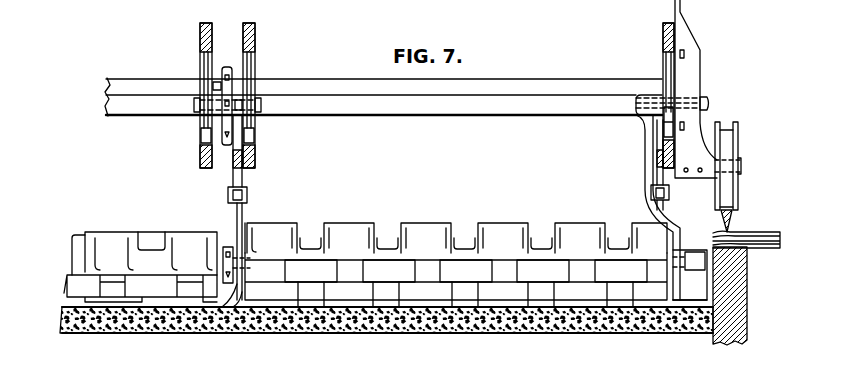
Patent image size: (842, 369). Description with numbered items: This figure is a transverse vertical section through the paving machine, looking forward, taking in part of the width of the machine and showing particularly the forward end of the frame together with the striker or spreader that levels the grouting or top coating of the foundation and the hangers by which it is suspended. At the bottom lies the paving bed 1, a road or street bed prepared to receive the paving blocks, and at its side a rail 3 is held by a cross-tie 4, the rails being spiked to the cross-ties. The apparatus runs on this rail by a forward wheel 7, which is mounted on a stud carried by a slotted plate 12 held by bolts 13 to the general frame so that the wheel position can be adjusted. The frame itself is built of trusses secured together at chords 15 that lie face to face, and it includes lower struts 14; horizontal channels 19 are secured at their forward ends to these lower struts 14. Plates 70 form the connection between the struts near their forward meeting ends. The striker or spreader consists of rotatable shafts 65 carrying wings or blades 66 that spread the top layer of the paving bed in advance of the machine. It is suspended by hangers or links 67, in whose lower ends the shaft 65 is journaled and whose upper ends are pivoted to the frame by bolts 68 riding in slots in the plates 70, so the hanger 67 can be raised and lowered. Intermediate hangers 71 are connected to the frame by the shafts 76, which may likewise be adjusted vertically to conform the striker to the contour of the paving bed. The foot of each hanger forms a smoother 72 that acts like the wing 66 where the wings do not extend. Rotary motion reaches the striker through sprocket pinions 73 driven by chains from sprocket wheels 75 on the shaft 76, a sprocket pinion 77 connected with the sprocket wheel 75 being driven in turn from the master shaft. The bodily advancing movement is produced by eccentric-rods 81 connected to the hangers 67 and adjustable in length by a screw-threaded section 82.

The paving bed 1 is at (389, 327).
The rails 3 is at (729, 226).
The cross-ties 4 is at (777, 240).
The forward wheels 7 is at (734, 122).
The slotted plates 12 is at (692, 65).
The bolts 13 is at (684, 52).
The struts 14 is at (205, 24).
The chords 15 is at (475, 80).
The horizontal channels 19 is at (205, 134).
The rotatable shafts 65 is at (67, 258).
The wings or blades 66 is at (93, 233).
The hangers or links 67 is at (643, 145).
The bolts 68 is at (707, 100).
The plates 70 is at (205, 78).
The intermediate hangers 71 is at (237, 215).
The smoother 72 is at (229, 310).
The sprocket pinions 73 is at (228, 246).
The sprocket wheels 75 is at (226, 66).
The shafts 76 is at (197, 110).
The sprocket pinion 77 is at (213, 84).
The eccentric-rods 81 is at (244, 180).
The screw-threaded section 82 is at (236, 162).